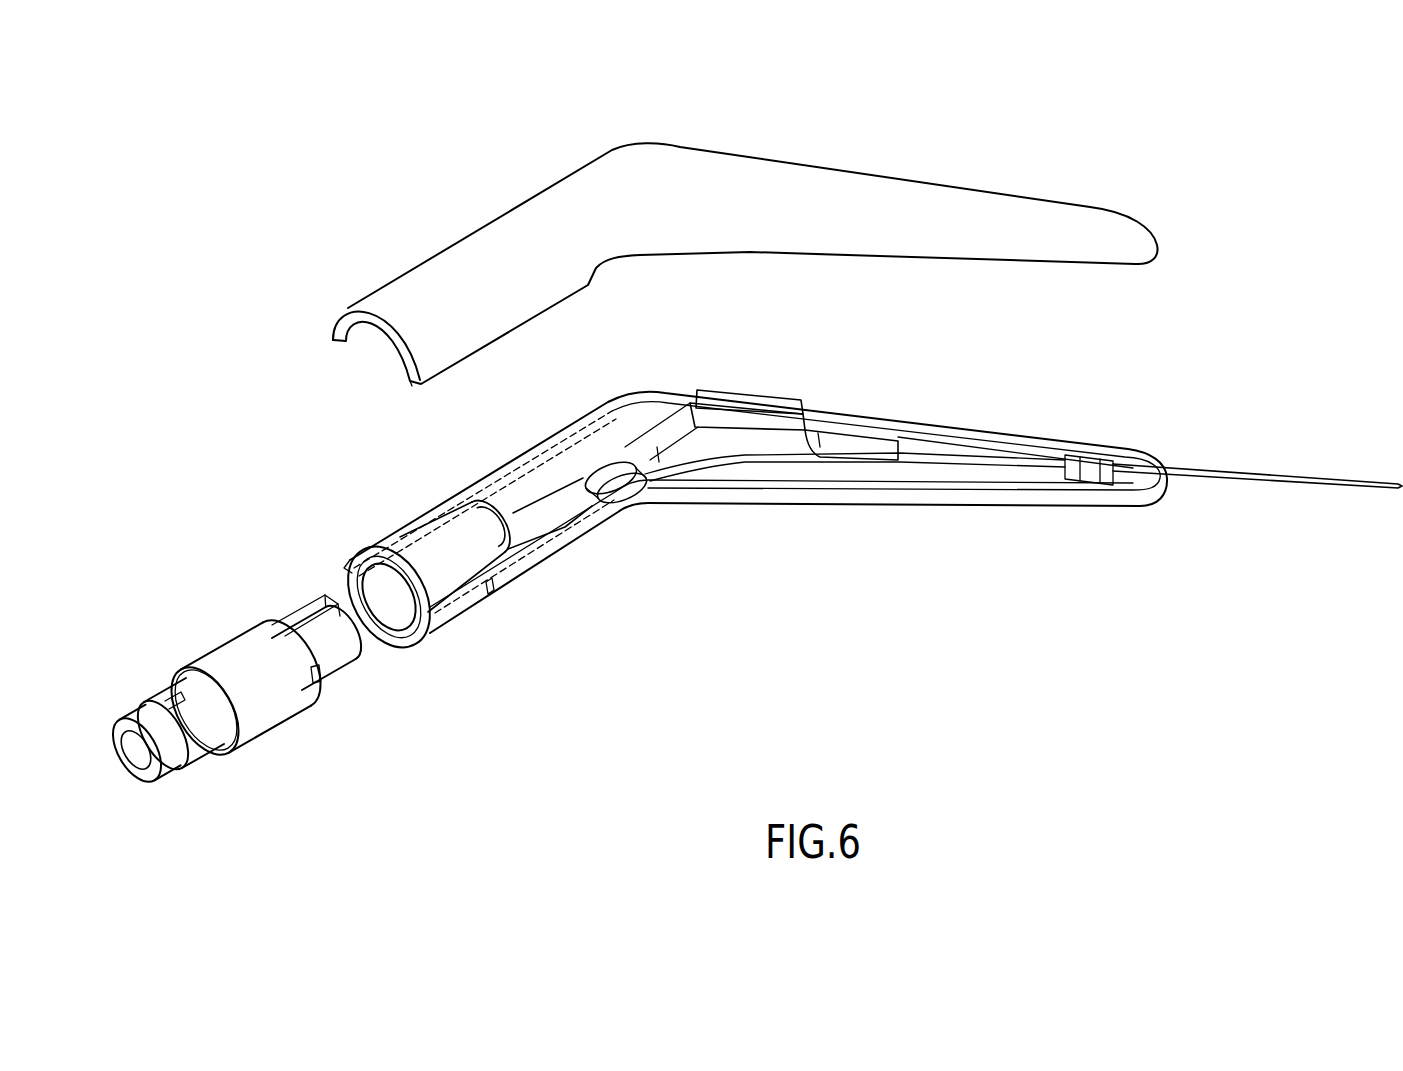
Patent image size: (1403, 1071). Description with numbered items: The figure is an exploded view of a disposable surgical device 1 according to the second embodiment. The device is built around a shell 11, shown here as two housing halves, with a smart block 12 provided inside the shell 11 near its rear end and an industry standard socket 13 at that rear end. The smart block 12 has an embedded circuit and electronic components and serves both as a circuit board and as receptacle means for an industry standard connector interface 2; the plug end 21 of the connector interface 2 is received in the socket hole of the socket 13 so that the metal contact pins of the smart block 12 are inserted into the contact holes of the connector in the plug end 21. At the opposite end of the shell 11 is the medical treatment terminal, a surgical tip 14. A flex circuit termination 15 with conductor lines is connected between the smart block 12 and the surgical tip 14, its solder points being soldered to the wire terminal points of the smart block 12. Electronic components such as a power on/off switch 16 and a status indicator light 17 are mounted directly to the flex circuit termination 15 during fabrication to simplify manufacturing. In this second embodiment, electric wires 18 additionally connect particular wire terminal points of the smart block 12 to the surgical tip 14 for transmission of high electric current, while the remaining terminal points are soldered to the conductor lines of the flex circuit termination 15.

The disposable surgical device 1 is at (1224, 273).
The industry standard connector interface 2 is at (276, 716).
The shell 11 is at (1087, 208).
The smart block 12 is at (476, 500).
The industry standard socket 13 is at (430, 537).
The surgical tip 14 is at (1233, 470).
The flex circuit termination 15 is at (674, 438).
The power on/off switch 16 is at (630, 503).
The status indicator light 17 is at (753, 400).
The electric wires 18 is at (541, 492).
The plug end 21 is at (349, 656).